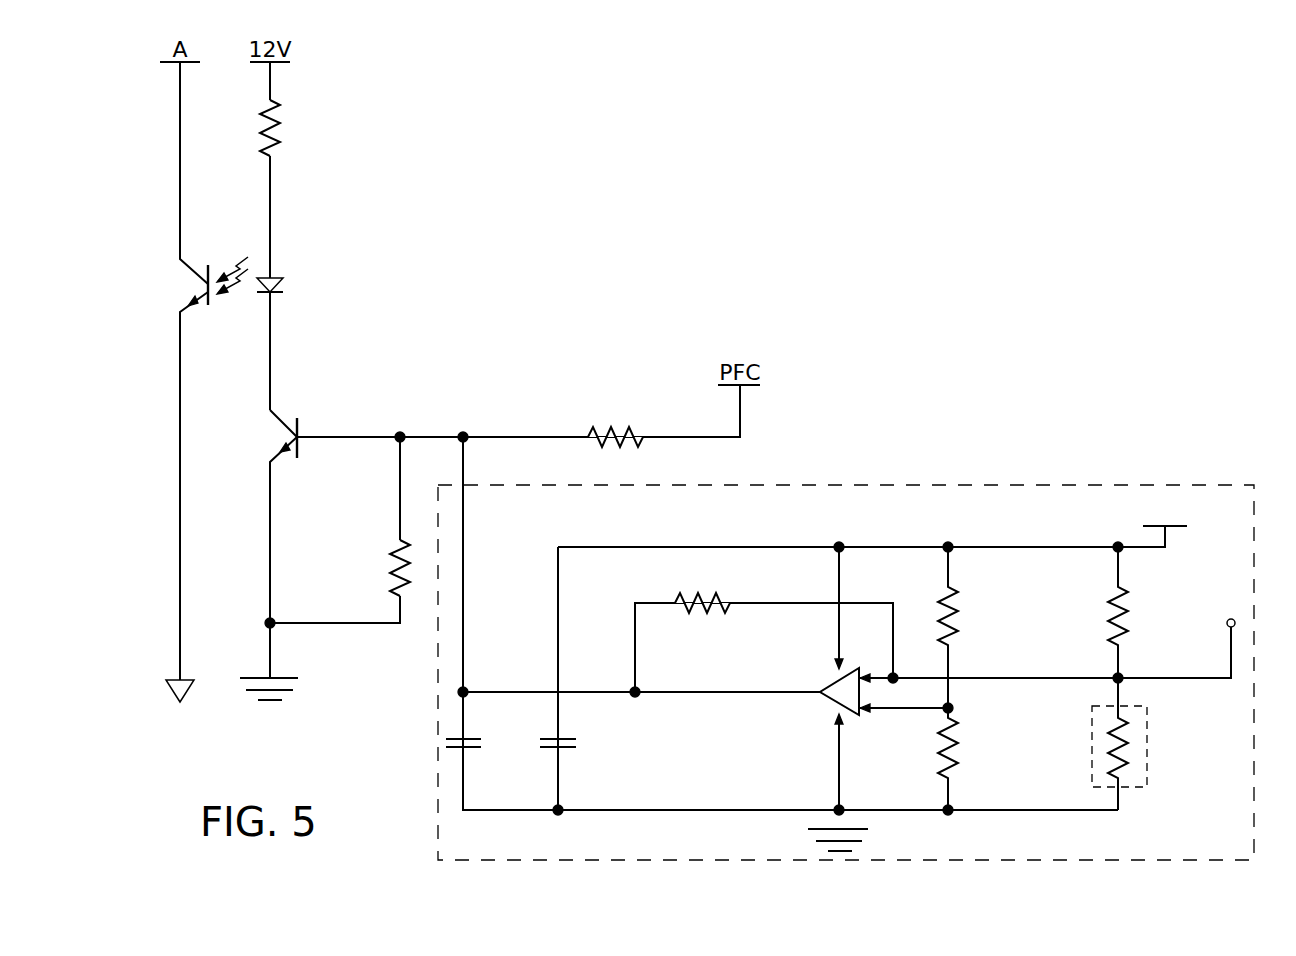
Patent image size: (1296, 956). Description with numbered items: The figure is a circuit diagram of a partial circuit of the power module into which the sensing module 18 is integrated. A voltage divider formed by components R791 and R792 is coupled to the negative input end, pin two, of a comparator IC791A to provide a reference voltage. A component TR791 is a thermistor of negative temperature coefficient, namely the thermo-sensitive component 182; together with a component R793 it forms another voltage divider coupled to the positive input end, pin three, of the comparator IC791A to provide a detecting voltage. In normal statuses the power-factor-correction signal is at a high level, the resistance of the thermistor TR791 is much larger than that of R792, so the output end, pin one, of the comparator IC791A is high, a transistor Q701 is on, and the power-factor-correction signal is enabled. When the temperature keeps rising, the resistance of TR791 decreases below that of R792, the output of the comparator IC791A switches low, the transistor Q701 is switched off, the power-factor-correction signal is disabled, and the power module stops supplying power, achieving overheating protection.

The sensing module 18 is at (1218, 484).
The thermo-sensitive component 182 is at (1157, 744).
The transistor Q701 is at (281, 410).
The comparator IC791A is at (831, 677).
The component R791 is at (982, 627).
The component R792 is at (982, 759).
The component R793 is at (1152, 612).
The thermistor TR791 is at (1178, 770).